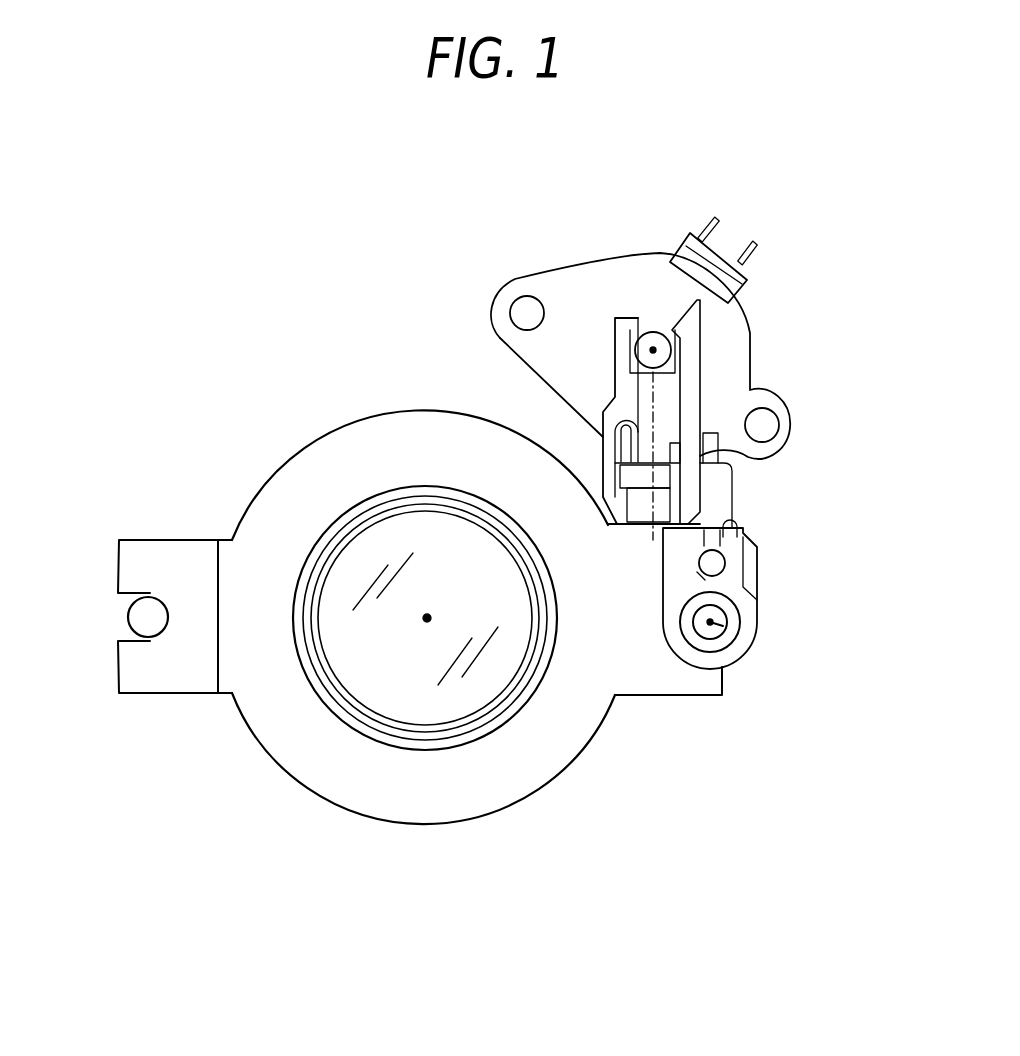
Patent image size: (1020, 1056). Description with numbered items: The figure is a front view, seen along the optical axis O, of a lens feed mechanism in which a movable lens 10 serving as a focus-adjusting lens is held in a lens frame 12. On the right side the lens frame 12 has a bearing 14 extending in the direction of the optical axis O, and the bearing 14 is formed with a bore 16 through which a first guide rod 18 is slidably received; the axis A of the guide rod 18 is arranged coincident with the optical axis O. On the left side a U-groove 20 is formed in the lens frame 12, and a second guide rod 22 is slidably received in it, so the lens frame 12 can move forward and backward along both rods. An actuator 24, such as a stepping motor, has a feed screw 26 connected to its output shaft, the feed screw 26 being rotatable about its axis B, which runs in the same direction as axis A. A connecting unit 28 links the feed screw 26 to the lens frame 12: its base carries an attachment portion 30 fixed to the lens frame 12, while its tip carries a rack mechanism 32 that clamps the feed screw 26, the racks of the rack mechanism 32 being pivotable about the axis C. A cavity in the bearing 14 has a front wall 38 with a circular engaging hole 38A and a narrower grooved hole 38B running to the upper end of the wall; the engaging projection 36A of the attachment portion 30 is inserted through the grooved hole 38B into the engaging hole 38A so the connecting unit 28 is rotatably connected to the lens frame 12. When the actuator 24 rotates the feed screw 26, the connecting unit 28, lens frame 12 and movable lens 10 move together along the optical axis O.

The movable lens 10 is at (358, 572).
The lens frame 12 is at (432, 780).
The bearing 14 is at (775, 587).
The bore 16 is at (690, 632).
The first guide rod 18 is at (758, 616).
The U-groove 20 is at (120, 630).
The second guide rod 22 is at (127, 604).
The actuator 24 is at (733, 342).
The feed screw 26 is at (653, 348).
The connecting unit 28 is at (760, 482).
The attachment portion 30 is at (725, 511).
The rack mechanism 32 is at (593, 390).
The engaging projection 36A is at (699, 563).
The front wall 38 is at (730, 558).
The engaging hole 38A is at (697, 577).
The grooved hole 38B is at (748, 536).
The axis of the guide rod A is at (712, 622).
The axis of the feed screw B is at (655, 336).
The axis of the rod C is at (648, 507).
The optical axis O is at (427, 622).